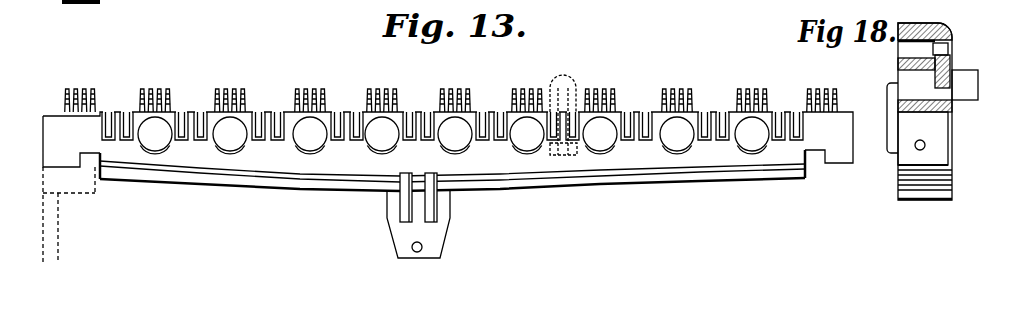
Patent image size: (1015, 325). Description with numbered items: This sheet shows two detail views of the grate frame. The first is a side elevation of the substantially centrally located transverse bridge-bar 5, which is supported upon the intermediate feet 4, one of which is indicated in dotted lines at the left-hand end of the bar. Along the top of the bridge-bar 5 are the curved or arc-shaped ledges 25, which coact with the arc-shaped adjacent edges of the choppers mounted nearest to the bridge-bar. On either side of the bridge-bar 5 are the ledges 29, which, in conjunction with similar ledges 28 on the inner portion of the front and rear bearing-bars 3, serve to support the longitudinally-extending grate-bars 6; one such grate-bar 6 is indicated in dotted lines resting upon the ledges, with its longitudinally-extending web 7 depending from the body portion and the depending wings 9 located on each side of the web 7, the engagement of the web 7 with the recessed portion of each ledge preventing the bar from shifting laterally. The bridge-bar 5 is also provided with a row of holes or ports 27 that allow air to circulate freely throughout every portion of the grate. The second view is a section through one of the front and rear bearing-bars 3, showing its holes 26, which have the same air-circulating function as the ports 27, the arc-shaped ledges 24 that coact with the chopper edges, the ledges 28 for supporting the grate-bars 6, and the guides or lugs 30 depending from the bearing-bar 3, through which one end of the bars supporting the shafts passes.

In FIG. 13, the transverse bridge-bar 5 is at (448, 159).
In FIG. 13, the curved or arc-shaped ledges 25 is at (833, 88).
In FIG. 13, the ledges 29 is at (796, 128).
In FIG. 13, the holes or ports 27 is at (680, 142).
In FIG. 13, the longitudinal grate-bar 6 is at (563, 76).
In FIG. 13, the depending wings 9 is at (577, 98).
In FIG. 13, the longitudinally-extending web 7 is at (562, 156).
In FIG. 13, the intermediate feet 4 is at (50, 223).
In FIG. 18, the front and rear bearing-bars 3 is at (915, 111).
In FIG. 18, the holes 26 is at (947, 50).
In FIG. 18, the arc-shaped ledges 24 is at (953, 58).
In FIG. 18, the ledges 28 is at (965, 85).
In FIG. 18, the guides or lugs 30 is at (943, 149).